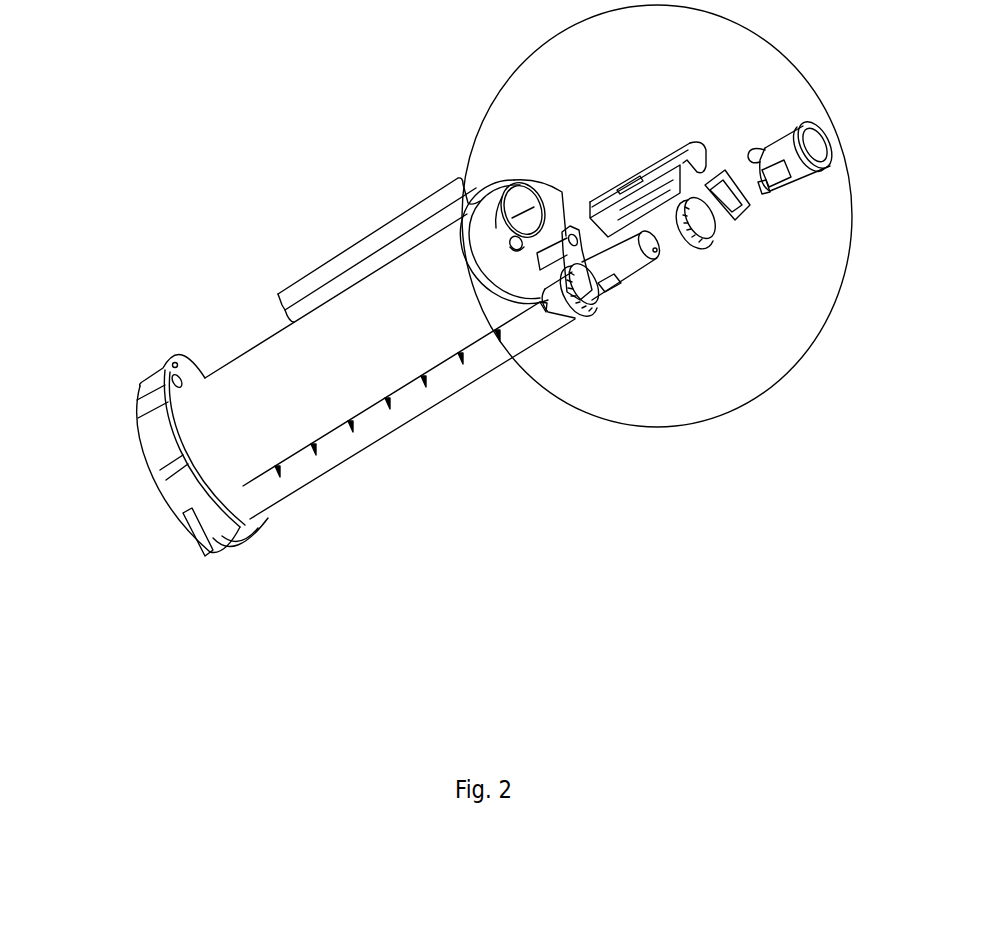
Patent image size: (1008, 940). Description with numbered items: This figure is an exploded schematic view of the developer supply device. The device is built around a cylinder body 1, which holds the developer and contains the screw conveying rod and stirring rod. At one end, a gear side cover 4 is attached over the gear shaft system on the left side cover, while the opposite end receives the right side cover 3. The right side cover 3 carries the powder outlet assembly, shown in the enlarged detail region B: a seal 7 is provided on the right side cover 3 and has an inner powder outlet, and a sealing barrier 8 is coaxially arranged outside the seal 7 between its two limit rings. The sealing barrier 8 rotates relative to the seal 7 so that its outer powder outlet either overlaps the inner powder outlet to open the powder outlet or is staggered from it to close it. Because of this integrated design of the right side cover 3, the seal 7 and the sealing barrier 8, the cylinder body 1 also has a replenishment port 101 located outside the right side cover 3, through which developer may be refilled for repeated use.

The cylinder body 1 is at (365, 373).
The replenishment port 101 is at (522, 203).
The right side cover 3 is at (683, 139).
The gear side cover 4 is at (162, 443).
The seal 7 is at (636, 281).
The sealing barrier 8 is at (786, 185).
The detail region B is at (745, 312).